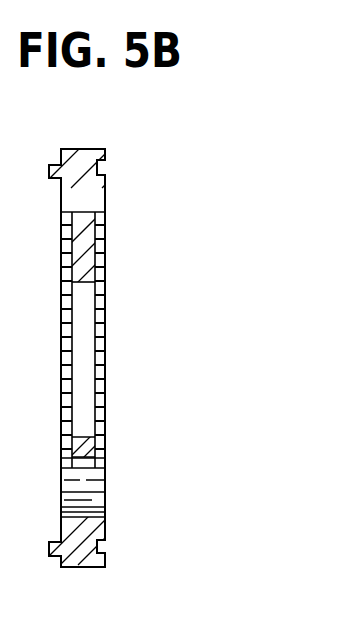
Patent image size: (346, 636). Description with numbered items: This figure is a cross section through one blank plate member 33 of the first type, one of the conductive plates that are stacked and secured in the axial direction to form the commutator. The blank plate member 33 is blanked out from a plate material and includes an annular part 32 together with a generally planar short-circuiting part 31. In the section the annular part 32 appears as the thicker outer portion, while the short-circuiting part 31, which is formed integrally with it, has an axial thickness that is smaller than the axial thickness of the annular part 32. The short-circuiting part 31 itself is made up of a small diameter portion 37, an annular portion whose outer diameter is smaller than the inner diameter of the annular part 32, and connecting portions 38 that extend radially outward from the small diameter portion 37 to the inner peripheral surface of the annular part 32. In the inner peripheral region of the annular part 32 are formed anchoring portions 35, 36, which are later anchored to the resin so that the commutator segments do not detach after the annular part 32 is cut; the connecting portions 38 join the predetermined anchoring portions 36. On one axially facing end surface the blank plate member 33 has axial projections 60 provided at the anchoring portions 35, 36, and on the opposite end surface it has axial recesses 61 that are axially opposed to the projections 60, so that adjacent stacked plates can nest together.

The short-circuiting part 31 is at (137, 342).
The annular part 32 is at (92, 568).
The blank plate member 33 is at (126, 167).
The anchoring portion 35 is at (62, 500).
The anchoring portion 36 is at (101, 203).
The small diameter portion 37 is at (95, 446).
The connecting portion 38 is at (88, 262).
The axial projection 60 is at (51, 166).
The axial recess 61 is at (98, 149).